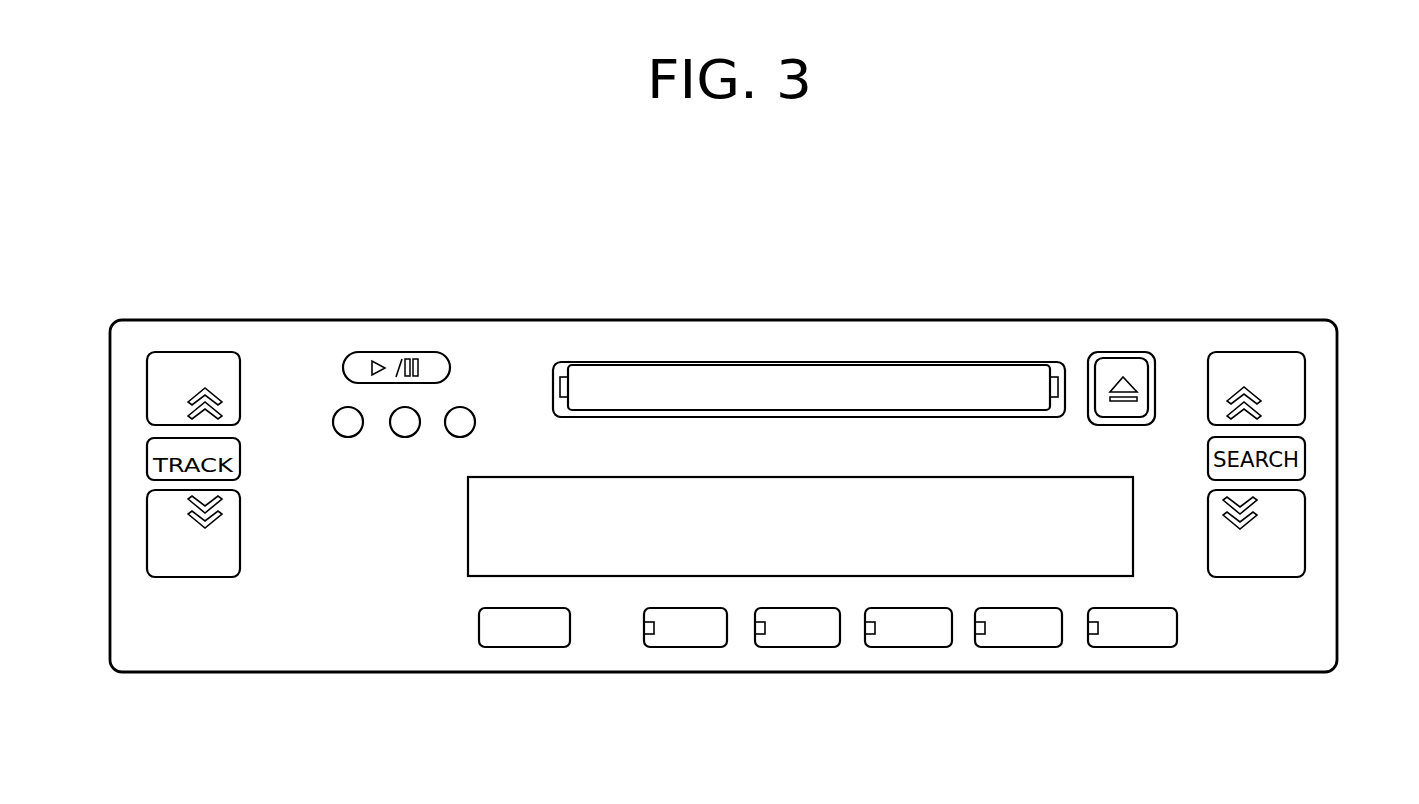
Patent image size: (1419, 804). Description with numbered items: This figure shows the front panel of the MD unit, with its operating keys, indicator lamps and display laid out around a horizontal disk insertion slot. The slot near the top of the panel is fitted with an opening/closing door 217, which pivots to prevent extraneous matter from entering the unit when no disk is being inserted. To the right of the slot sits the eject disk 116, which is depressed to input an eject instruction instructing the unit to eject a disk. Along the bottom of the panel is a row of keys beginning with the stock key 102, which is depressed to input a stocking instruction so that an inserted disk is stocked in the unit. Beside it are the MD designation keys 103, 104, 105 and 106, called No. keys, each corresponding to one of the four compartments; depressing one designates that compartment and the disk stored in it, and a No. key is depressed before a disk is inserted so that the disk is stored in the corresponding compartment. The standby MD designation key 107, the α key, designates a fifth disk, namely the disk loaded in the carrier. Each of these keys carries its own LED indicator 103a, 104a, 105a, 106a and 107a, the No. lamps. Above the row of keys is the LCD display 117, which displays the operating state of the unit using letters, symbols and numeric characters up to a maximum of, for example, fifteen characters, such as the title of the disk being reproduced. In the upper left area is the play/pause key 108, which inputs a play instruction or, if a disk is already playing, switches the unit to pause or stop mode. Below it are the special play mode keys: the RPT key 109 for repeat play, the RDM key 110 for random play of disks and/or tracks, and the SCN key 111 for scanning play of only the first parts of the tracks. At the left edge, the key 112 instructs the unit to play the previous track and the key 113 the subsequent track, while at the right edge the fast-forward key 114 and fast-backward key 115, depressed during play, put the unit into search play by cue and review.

The stock key 102 is at (523, 648).
The MD designation key 103 is at (707, 648).
The LED indicator 103a is at (655, 628).
The MD designation key 104 is at (820, 648).
The LED indicator 104a is at (766, 628).
The MD designation key 105 is at (928, 648).
The LED indicator 105a is at (876, 628).
The MD designation key 106 is at (1036, 648).
The LED indicator 106a is at (986, 628).
The standby MD designation key 107 is at (1149, 648).
The LED indicator 107a is at (1099, 628).
The play/pause key 108 is at (405, 352).
The RPT key 109 is at (340, 410).
The RDM key 110 is at (418, 415).
The SCN key 111 is at (471, 411).
The key 112 is at (147, 403).
The key 113 is at (147, 527).
The fast-forward key 114 is at (1305, 385).
The fast-backward key 115 is at (1305, 520).
The eject disk 116 is at (1142, 352).
The LCD display 117 is at (617, 576).
The opening/closing door 217 is at (1027, 377).